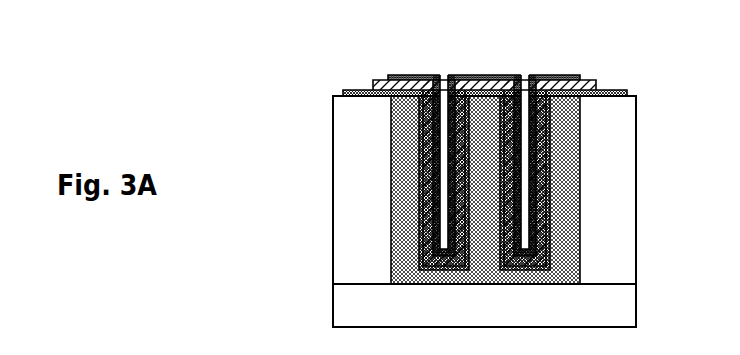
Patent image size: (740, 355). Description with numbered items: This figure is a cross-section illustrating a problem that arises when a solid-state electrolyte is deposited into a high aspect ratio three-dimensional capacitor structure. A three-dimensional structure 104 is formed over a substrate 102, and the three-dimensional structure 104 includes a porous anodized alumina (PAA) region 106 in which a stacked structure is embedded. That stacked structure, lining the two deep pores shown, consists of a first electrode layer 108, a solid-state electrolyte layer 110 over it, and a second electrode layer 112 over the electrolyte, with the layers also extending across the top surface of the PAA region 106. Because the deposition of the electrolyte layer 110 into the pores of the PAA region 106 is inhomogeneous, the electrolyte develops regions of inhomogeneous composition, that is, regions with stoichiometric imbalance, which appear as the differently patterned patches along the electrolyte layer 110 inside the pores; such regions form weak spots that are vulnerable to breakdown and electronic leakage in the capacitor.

The substrate 102 is at (366, 301).
The 3D structure 104 is at (365, 129).
The porous anodized alumina (PAA) region 106 is at (408, 211).
The first electrode layer 108 is at (357, 91).
The solid-state electrolyte layer 110 is at (415, 77).
The second electrode layer 112 is at (510, 77).